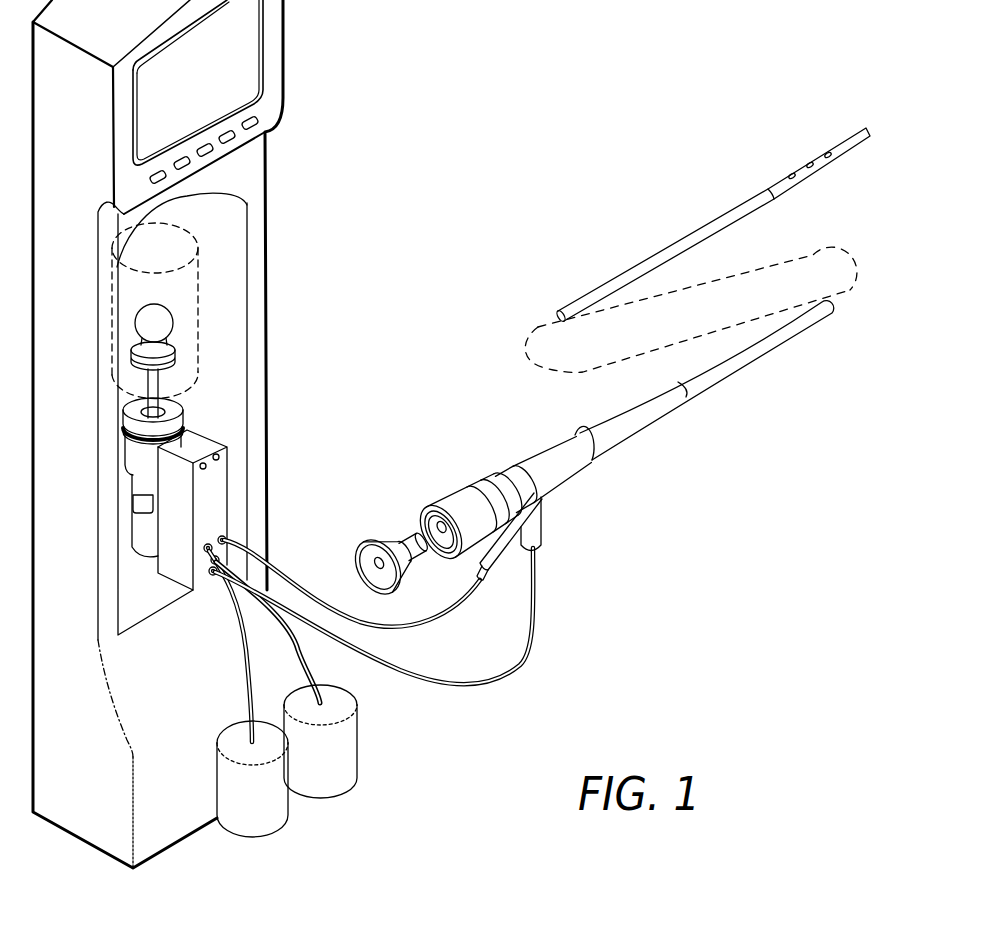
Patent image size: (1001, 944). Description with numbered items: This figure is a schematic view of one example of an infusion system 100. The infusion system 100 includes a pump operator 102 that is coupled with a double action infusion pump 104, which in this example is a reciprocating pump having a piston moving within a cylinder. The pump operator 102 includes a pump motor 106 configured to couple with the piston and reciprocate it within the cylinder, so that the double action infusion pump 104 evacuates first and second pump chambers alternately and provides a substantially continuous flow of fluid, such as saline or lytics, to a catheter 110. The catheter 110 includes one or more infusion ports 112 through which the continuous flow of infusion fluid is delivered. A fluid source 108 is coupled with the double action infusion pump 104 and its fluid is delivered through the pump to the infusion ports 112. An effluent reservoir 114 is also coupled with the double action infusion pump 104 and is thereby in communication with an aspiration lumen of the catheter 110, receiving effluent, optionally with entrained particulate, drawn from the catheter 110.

The infusion system 100 is at (480, 226).
The pump operator 102 is at (260, 333).
The double action infusion pump 104 is at (210, 437).
The pump motor 106 is at (200, 248).
The fluid source 108 is at (348, 742).
The catheter 110 is at (652, 420).
The infusion ports 112 is at (828, 151).
The effluent reservoir 114 is at (272, 820).